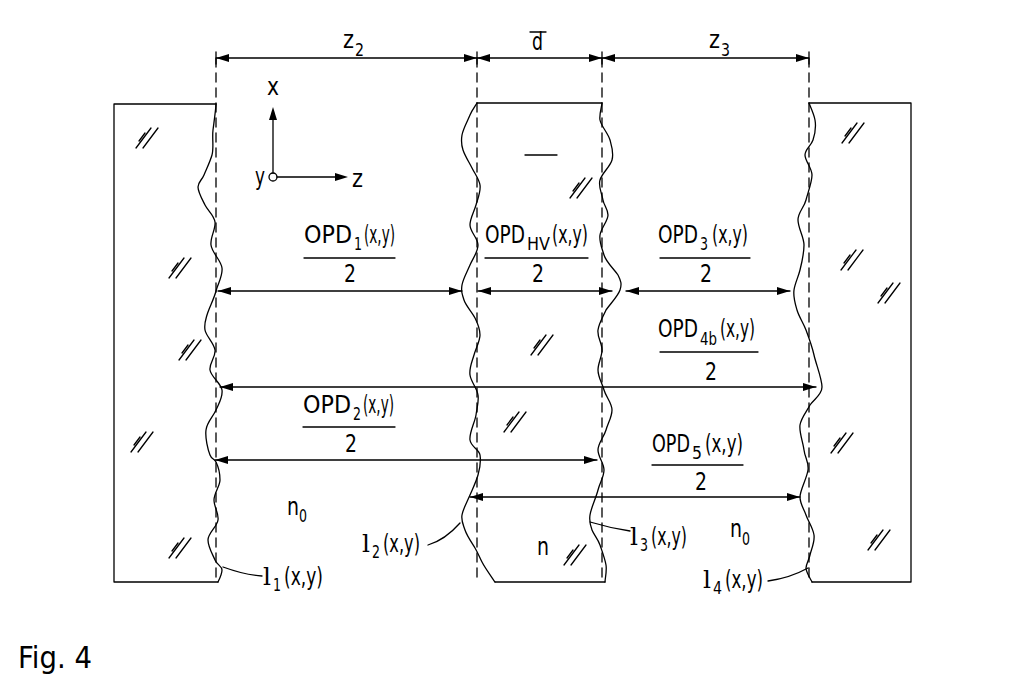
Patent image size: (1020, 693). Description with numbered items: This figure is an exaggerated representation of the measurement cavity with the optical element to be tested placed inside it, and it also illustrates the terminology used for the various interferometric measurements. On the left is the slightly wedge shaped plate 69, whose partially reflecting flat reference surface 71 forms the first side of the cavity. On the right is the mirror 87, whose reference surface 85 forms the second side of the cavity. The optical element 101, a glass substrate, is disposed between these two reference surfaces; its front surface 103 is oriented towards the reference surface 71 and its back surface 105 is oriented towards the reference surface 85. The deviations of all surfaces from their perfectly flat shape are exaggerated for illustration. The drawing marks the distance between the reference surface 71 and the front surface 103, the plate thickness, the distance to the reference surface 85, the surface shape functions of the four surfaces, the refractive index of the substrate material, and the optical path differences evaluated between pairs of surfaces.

The wedge shaped plate 69 is at (165, 583).
The reference surface 71 is at (217, 581).
The optical element 101 is at (541, 342).
The front surface 103 is at (462, 133).
The back surface 105 is at (600, 130).
The reference surface 85 is at (810, 580).
The mirror 87 is at (865, 583).